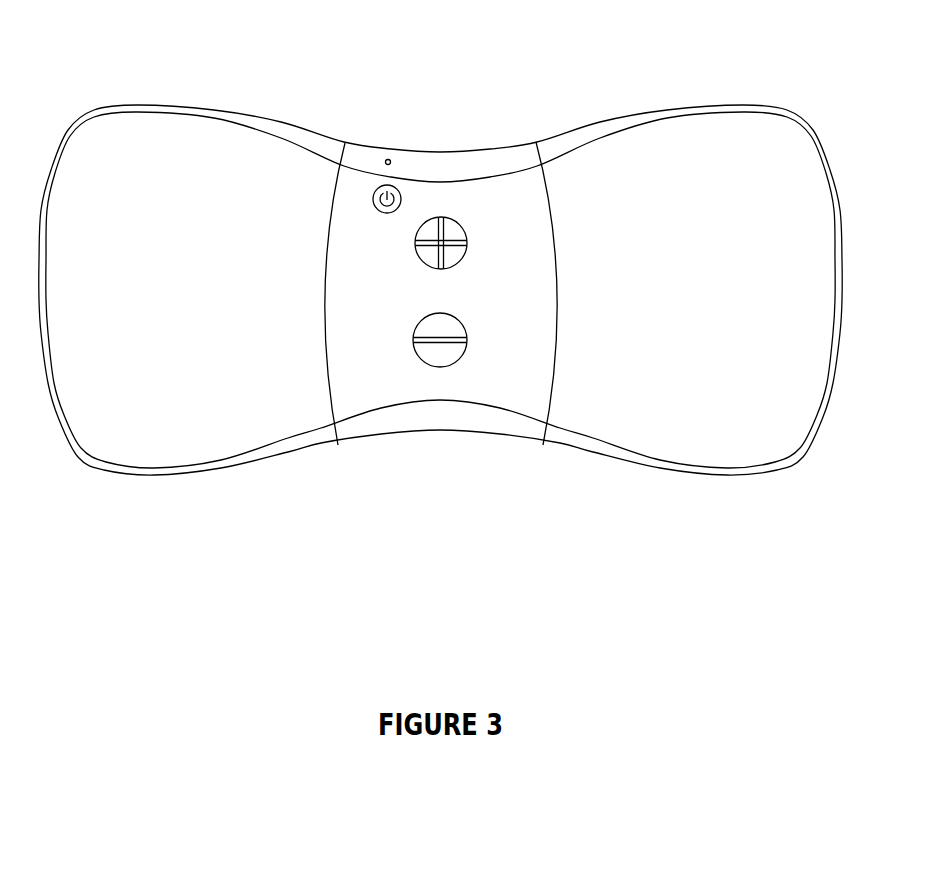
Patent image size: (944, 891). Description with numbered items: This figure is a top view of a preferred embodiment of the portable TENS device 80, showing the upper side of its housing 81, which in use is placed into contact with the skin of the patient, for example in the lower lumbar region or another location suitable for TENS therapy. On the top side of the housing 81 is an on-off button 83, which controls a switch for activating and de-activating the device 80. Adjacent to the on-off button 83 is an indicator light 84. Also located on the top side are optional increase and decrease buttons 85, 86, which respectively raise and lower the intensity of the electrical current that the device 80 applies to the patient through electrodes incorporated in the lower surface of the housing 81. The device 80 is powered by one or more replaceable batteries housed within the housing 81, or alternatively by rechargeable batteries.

The portable TENS device 80 is at (647, 80).
The housing 81 is at (742, 120).
The on-off button 83 is at (386, 215).
The indicator light 84 is at (391, 156).
The increase button 85 is at (470, 236).
The decrease button 86 is at (470, 336).